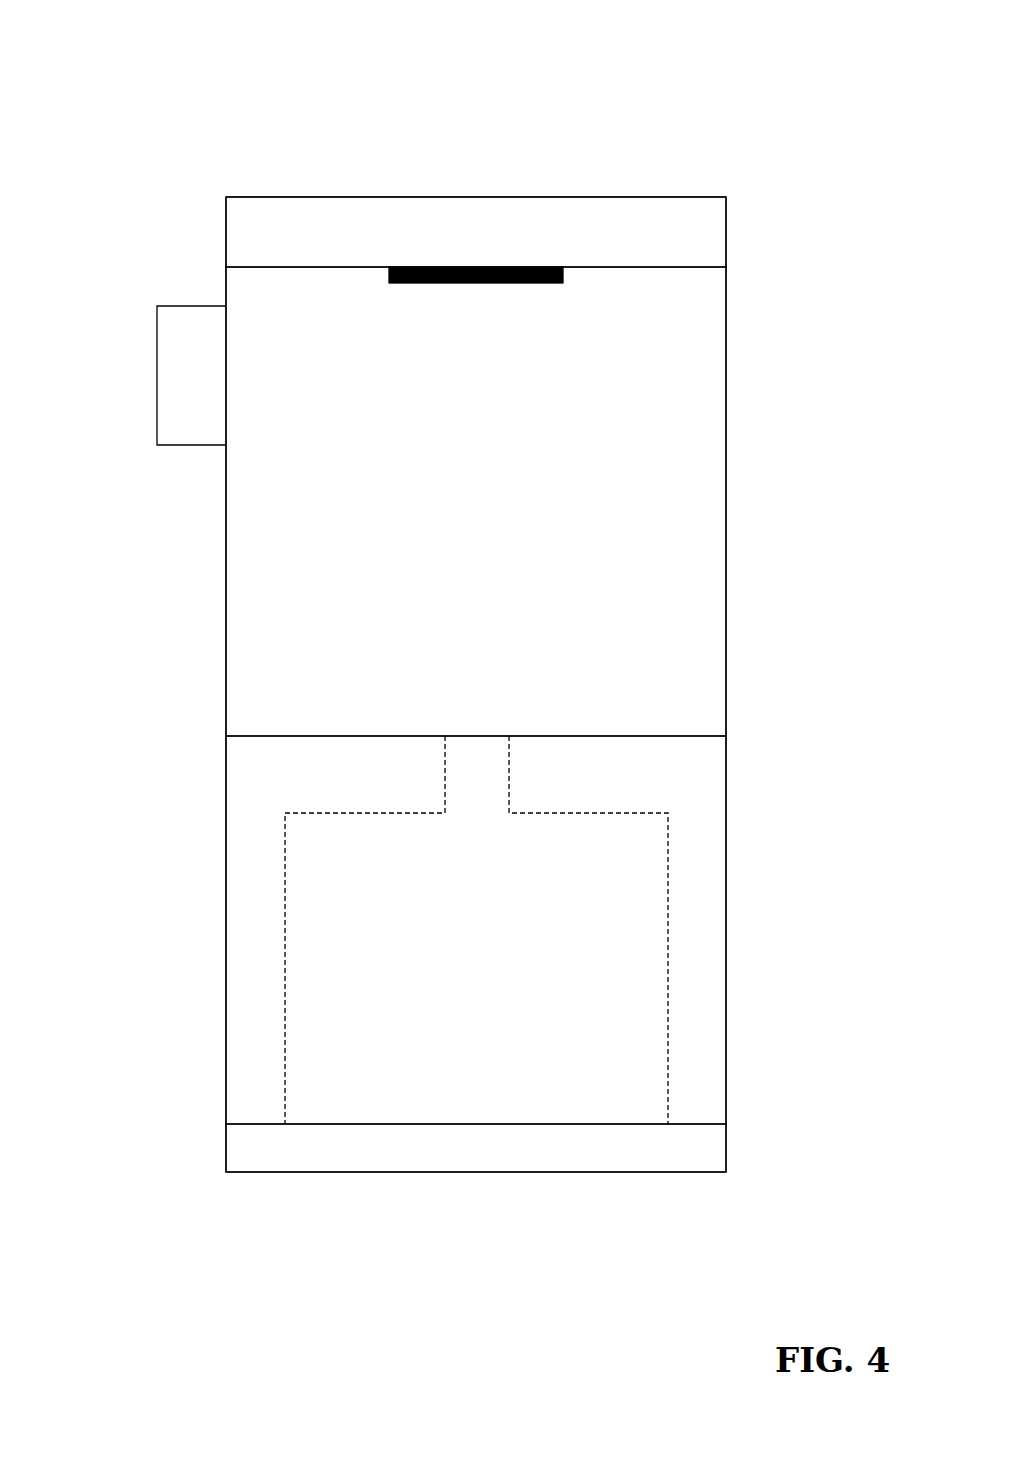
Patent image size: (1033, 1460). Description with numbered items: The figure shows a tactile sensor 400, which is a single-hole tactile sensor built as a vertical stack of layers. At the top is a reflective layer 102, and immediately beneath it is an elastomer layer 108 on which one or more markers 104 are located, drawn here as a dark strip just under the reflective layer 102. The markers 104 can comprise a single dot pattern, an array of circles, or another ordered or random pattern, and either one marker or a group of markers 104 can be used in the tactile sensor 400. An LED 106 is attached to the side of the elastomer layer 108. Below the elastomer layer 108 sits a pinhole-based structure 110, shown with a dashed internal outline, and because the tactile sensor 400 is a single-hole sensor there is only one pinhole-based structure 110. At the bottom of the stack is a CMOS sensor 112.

The tactile sensor 400 is at (743, 83).
The reflective layer 102 is at (722, 238).
The marker 104 is at (565, 276).
The LED 106 is at (174, 327).
The elastomer layer 108 is at (228, 530).
The pinhole-based structure 110 is at (727, 968).
The CMOS sensor 112 is at (226, 1146).